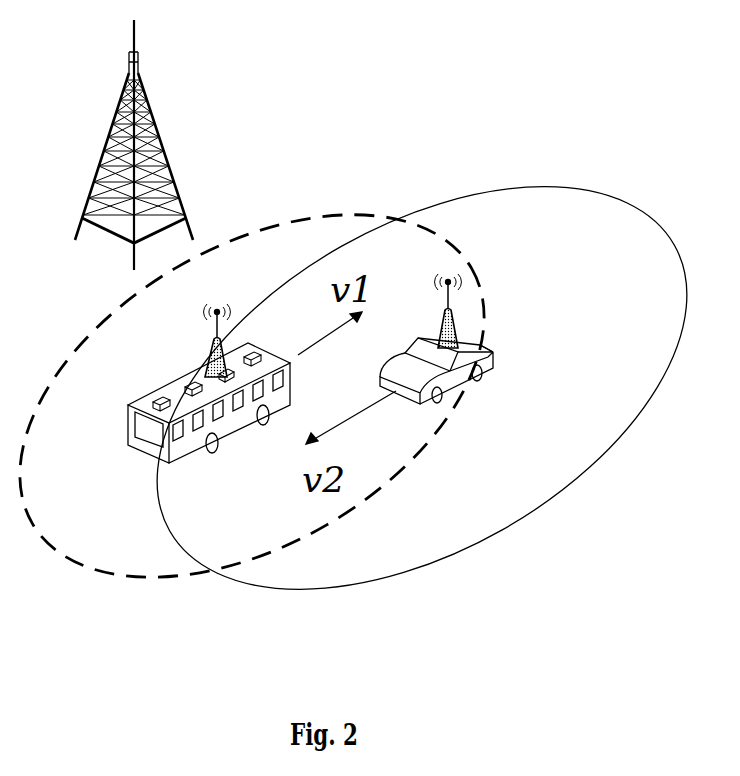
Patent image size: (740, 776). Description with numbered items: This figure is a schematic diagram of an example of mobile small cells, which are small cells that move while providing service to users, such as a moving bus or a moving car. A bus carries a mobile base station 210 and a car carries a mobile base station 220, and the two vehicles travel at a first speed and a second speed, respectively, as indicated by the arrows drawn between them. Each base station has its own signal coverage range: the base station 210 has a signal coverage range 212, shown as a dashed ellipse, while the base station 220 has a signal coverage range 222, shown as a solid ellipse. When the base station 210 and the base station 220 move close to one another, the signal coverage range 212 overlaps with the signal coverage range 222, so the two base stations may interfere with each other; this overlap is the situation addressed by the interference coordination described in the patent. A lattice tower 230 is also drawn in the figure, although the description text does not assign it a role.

The mobile base station 210 is at (207, 341).
The signal coverage range 212 is at (337, 213).
The mobile base station 220 is at (458, 320).
The signal coverage range 222 is at (569, 494).
The base station tower 230 is at (160, 136).